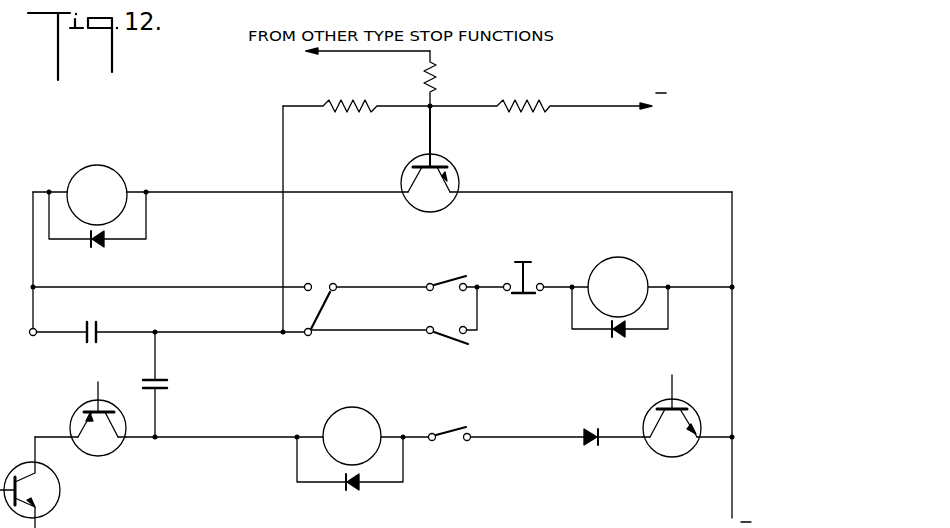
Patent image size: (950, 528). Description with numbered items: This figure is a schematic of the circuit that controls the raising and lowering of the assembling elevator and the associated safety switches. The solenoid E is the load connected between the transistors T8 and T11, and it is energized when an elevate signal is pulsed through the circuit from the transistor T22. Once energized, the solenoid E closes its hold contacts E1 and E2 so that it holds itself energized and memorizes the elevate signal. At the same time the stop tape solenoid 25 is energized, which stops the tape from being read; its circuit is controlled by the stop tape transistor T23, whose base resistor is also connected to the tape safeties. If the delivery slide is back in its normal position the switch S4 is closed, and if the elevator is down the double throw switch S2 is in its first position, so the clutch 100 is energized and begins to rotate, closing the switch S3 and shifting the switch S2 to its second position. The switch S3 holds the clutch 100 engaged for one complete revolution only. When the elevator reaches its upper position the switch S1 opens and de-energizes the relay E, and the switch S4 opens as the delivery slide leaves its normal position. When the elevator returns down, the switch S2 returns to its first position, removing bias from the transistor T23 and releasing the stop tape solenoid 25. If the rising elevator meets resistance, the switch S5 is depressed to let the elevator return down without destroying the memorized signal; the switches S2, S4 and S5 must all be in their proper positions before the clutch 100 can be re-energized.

The stop tape solenoid 25 is at (113, 177).
The clutch 100 is at (636, 278).
The stop tape transistor T23 is at (458, 175).
The transistor T11 is at (687, 416).
The transistor T8 is at (86, 419).
The transistor T22 is at (45, 482).
The solenoid E is at (362, 448).
The hold contact E1 is at (166, 384).
The hold contact E2 is at (96, 321).
The switch S1 is at (458, 440).
The double throw switch S2 is at (327, 310).
The switch S3 is at (452, 347).
The switch S4 is at (454, 283).
The switch S5 is at (533, 274).